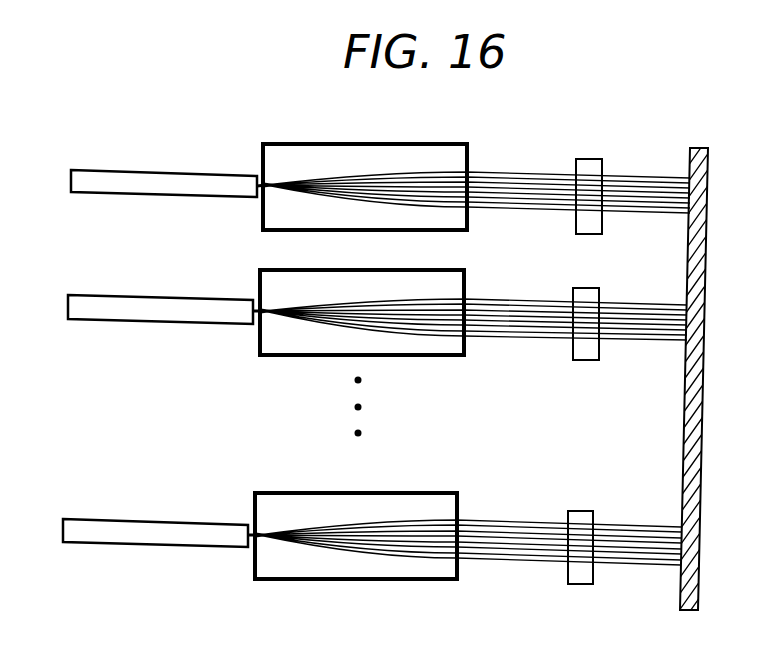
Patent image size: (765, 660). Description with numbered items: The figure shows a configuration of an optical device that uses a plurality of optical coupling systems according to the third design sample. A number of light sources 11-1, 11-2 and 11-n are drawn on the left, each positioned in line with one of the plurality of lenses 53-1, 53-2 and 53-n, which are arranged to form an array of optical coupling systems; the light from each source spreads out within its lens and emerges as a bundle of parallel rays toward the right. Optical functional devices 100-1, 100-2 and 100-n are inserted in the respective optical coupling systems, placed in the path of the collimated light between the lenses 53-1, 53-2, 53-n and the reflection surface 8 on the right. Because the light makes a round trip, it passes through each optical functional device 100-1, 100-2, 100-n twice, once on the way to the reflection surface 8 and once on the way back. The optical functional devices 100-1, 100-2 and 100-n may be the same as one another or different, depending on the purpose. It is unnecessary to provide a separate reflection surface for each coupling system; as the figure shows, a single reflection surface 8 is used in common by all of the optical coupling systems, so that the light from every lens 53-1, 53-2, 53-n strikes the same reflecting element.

The laser light source 11-1 is at (160, 180).
The laser light source 11-2 is at (157, 305).
The laser light source 11-n is at (150, 528).
The lens 53-1 is at (338, 157).
The lens 53-2 is at (343, 288).
The lens 53-n is at (330, 512).
The optical functional device 100-1 is at (586, 166).
The optical functional device 100-2 is at (585, 292).
The optical functional device 100-n is at (578, 519).
The reflection surface 8 is at (686, 423).